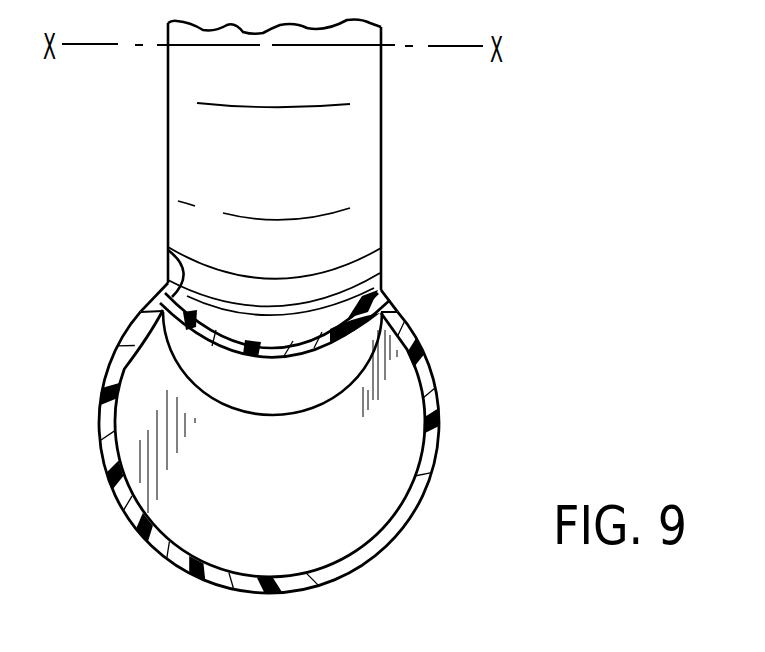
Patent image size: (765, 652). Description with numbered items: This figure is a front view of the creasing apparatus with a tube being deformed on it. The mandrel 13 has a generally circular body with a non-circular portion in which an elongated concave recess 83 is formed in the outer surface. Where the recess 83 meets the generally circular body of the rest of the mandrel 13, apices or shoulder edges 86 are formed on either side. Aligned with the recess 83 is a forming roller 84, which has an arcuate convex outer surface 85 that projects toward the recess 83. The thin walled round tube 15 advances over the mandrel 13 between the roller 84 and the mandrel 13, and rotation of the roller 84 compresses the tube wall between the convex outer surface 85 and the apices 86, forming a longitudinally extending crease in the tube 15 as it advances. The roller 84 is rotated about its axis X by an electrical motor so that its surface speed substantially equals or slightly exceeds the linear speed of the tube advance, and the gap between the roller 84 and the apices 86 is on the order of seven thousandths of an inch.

The forming roller 84 is at (358, 143).
The arcuate convex outer surface 85 is at (170, 262).
The apices or shoulder edges 86 is at (128, 348).
The elongated concave recess 83 is at (308, 383).
The thin walled round tube 15 is at (437, 452).
The mandrel 13 is at (283, 521).